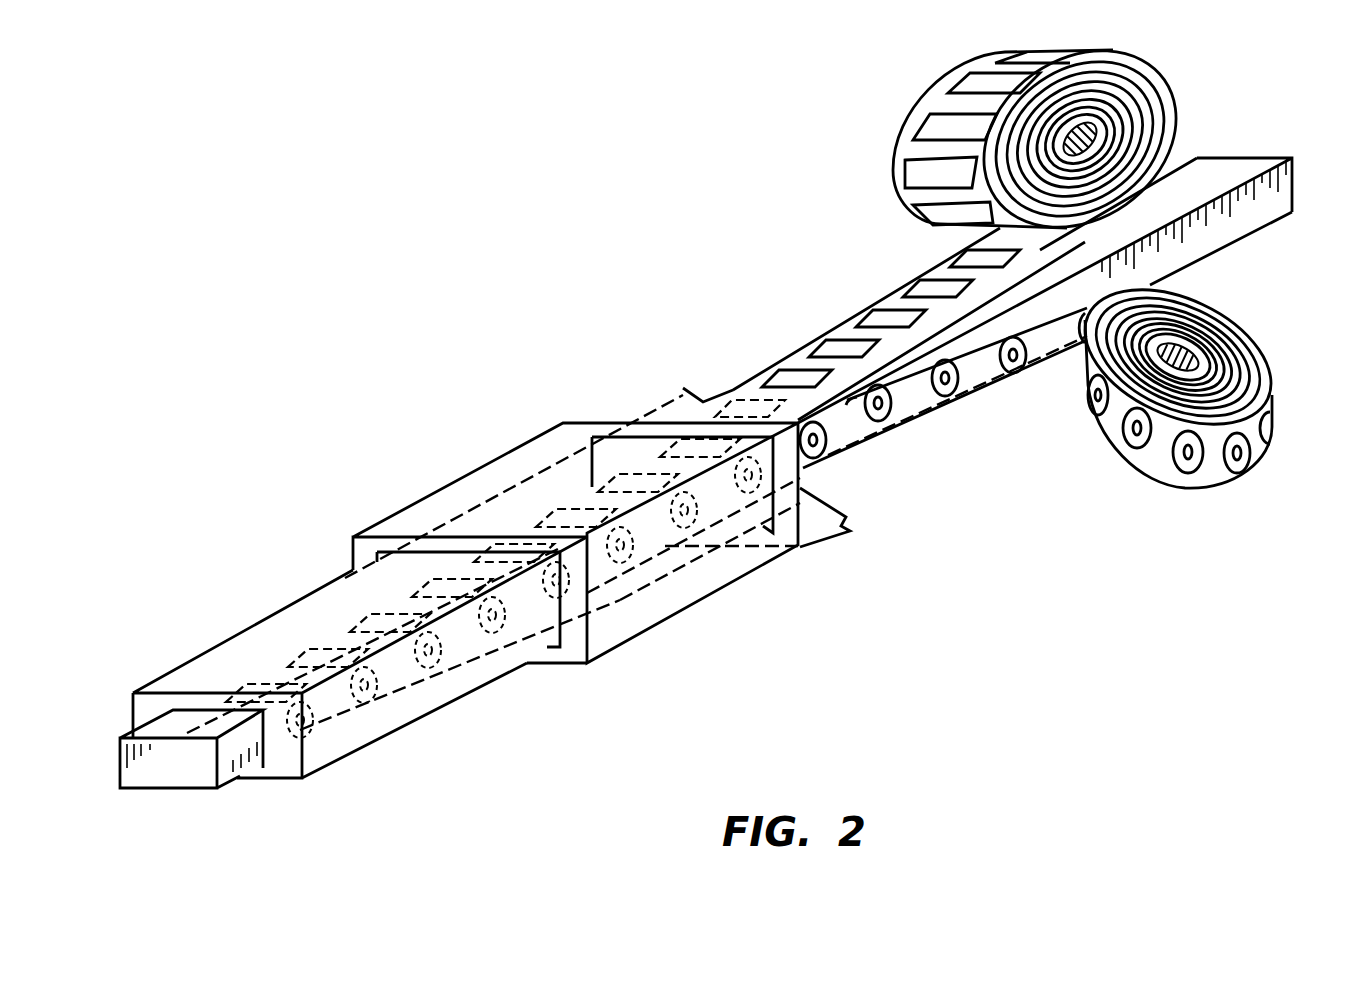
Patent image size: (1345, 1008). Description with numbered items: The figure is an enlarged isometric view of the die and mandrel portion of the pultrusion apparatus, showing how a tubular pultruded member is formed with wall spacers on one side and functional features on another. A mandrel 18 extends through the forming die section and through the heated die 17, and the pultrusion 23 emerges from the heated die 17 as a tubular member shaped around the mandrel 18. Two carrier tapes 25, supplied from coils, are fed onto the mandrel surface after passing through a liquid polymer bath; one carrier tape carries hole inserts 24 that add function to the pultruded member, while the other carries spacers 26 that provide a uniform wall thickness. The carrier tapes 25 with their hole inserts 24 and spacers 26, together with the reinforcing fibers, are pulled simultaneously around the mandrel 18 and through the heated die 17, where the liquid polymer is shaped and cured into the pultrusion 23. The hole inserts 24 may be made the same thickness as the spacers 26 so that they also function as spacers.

The heated die 17 is at (694, 583).
The mandrel 18 is at (168, 783).
The pultrusion 23 is at (394, 713).
The hole inserts 24 is at (1181, 458).
The carrier tapes 25 is at (936, 93).
The spacers 26 is at (924, 127).